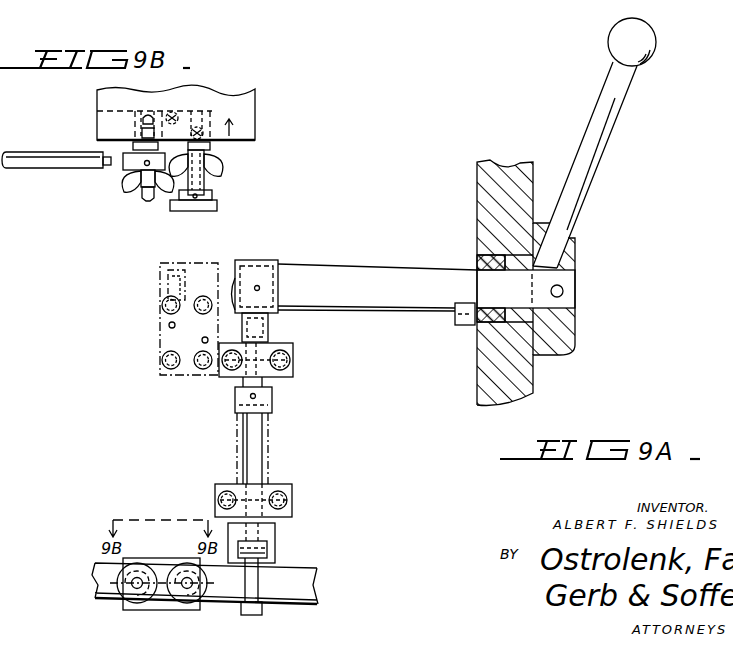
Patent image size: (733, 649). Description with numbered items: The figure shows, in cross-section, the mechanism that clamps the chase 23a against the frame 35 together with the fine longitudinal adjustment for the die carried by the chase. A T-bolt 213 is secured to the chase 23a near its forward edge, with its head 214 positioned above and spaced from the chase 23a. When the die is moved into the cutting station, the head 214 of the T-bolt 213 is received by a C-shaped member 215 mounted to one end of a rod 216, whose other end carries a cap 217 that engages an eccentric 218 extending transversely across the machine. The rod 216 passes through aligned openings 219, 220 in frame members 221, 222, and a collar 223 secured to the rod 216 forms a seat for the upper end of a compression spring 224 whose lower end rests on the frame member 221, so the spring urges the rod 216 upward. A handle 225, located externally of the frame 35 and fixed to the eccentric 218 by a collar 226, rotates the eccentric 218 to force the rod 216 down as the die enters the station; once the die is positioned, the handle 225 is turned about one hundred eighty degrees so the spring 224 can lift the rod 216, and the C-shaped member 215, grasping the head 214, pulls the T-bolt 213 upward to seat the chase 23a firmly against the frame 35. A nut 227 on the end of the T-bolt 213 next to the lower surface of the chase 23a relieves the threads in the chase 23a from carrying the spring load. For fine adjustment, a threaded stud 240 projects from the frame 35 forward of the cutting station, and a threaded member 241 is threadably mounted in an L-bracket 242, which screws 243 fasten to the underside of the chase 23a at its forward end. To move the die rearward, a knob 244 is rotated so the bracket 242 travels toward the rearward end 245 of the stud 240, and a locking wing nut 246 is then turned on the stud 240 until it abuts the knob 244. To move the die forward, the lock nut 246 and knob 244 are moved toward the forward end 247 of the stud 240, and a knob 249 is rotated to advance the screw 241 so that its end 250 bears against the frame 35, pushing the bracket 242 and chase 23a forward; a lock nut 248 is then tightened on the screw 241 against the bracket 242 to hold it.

In FIG. 9B, the chase 23a is at (250, 116).
In FIG. 9A, the chase 23a is at (305, 602).
In FIG. 9A, the frame 35 is at (492, 192).
In FIG. 9A, the T-bolt 213 is at (253, 585).
In FIG. 9A, the head of T-bolt 214 is at (268, 550).
In FIG. 9A, the C-shaped member 215 is at (277, 528).
In FIG. 9A, the rod 216 is at (265, 378).
In FIG. 9A, the cap 217 is at (270, 333).
In FIG. 9A, the eccentric 218 is at (293, 276).
In FIG. 9A, the opening 219 is at (225, 491).
In FIG. 9A, the opening 220 is at (237, 378).
In FIG. 9A, the frame member 221 is at (292, 490).
In FIG. 9A, the frame member 222 is at (295, 365).
In FIG. 9A, the collar 223 is at (273, 401).
In FIG. 9A, the compression spring 224 is at (268, 445).
In FIG. 9A, the handle 225 is at (618, 118).
In FIG. 9A, the collar 226 is at (567, 329).
In FIG. 9A, the nut 227 is at (262, 608).
In FIG. 9B, the threaded stud 240 is at (146, 201).
In FIG. 9B, the threaded member 241 is at (205, 186).
In FIG. 9B, the L-bracket 242 is at (207, 149).
In FIG. 9B, the screws 243 is at (200, 127).
In FIG. 9B, the knob 244 is at (127, 168).
In FIG. 9B, the rearward end of stud 245 is at (97, 118).
In FIG. 9B, the locking wing nut 246 is at (130, 188).
In FIG. 9B, the forward end of stud 247 is at (146, 201).
In FIG. 9B, the lock nut 248 is at (221, 170).
In FIG. 9B, the knob 249 is at (218, 209).
In FIG. 9B, the end of screw 250 is at (212, 139).